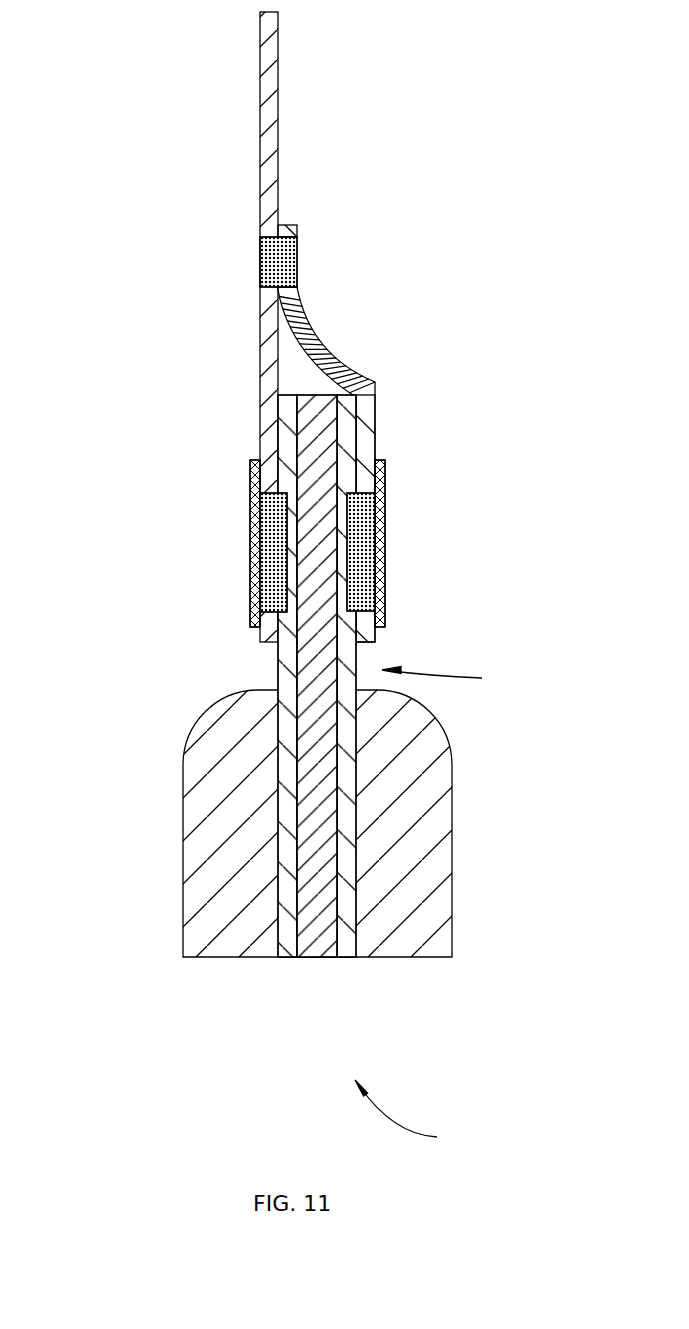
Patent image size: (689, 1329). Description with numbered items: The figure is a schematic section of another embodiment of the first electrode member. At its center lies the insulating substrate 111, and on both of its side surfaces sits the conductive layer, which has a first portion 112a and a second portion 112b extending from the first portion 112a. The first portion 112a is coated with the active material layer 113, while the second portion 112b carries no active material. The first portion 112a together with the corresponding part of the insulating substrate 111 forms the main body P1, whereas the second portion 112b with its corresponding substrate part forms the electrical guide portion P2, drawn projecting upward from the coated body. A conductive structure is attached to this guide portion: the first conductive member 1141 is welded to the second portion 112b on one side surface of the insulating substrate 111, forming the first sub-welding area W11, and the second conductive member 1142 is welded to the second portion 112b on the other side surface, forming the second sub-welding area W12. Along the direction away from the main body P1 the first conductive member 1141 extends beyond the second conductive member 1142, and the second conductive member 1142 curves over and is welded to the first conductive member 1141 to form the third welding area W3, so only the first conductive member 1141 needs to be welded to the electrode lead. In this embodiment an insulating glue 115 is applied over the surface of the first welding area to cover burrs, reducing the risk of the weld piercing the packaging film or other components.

The insulating substrate 111 is at (315, 958).
The first portion 112a is at (283, 958).
The second portion 112b is at (250, 479).
The active material layer 113 is at (442, 865).
The first conductive member 1141 is at (260, 127).
The second conductive member 1142 is at (377, 393).
The insulating glue 115 is at (252, 605).
The third welding area W3 is at (288, 265).
The first sub-welding area W11 is at (272, 562).
The second sub-welding area W12 is at (373, 542).
The main body P1 is at (413, 1115).
The electrical guide portion P2 is at (448, 678).